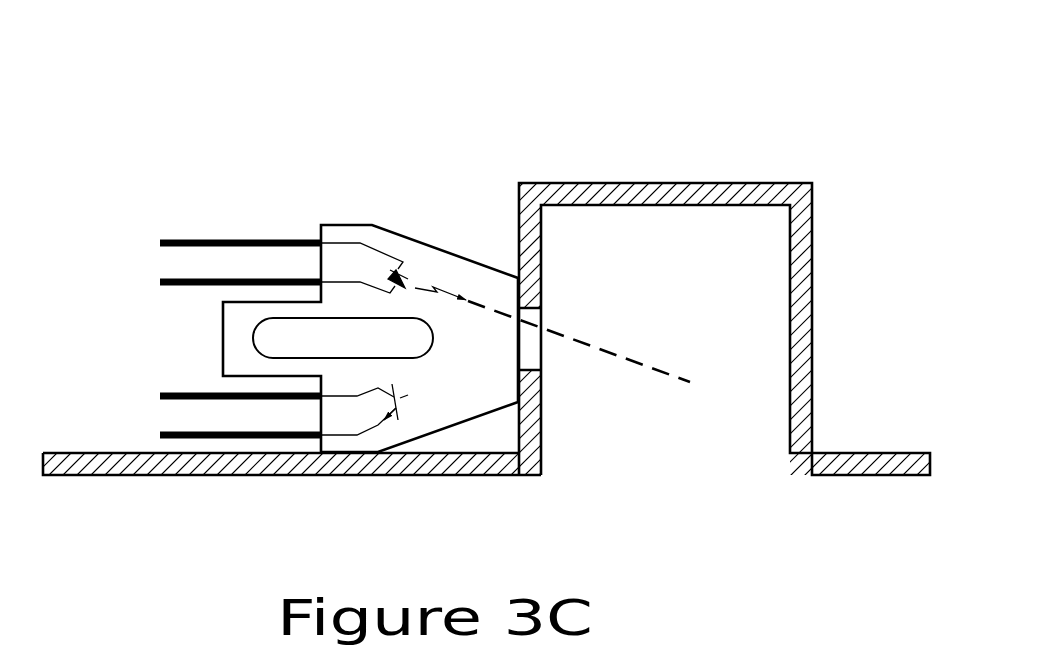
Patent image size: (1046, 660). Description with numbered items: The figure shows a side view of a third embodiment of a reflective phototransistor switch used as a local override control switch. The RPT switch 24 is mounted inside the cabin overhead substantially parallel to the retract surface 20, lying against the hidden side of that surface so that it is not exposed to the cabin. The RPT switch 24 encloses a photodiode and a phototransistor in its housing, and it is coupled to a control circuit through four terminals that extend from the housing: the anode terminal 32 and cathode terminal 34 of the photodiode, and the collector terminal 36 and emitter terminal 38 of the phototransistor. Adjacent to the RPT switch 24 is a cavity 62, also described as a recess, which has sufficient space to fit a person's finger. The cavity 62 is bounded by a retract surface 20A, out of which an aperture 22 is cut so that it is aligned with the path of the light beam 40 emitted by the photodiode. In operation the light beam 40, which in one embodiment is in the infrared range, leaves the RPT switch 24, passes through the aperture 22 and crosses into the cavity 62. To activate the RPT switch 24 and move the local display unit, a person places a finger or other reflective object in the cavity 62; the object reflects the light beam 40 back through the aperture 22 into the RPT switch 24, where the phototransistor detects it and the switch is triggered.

The retract surface 20 is at (247, 476).
The retract surface 20A is at (542, 424).
The aperture 22 is at (543, 354).
The reflective phototransistor switch 24 is at (376, 225).
The anode terminal 32 is at (164, 236).
The cathode terminal 34 is at (164, 275).
The collector terminal 36 is at (164, 389).
The emitter terminal 38 is at (164, 428).
The light beam 40 is at (563, 332).
The cavity 62 is at (731, 431).